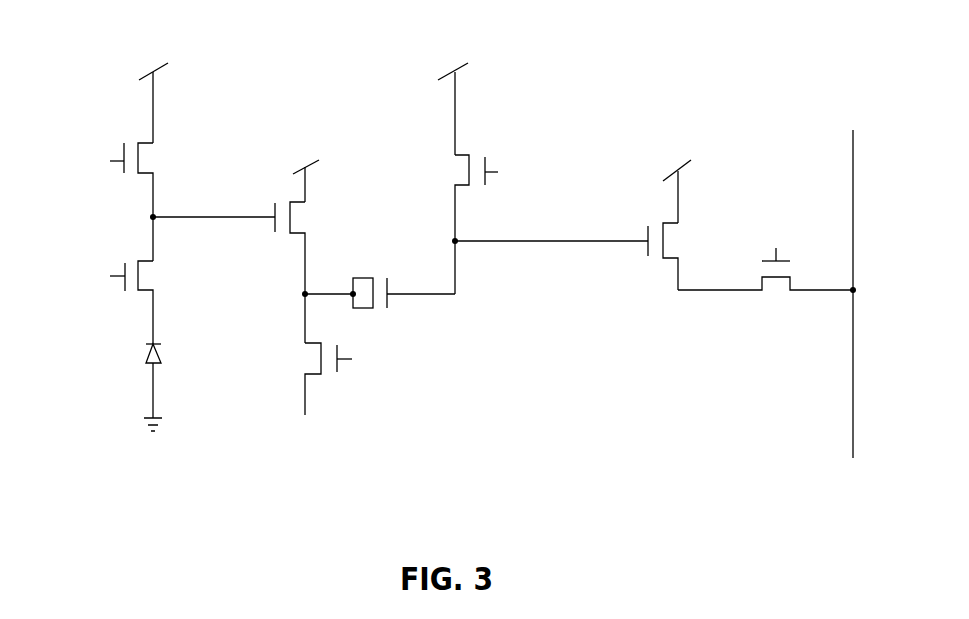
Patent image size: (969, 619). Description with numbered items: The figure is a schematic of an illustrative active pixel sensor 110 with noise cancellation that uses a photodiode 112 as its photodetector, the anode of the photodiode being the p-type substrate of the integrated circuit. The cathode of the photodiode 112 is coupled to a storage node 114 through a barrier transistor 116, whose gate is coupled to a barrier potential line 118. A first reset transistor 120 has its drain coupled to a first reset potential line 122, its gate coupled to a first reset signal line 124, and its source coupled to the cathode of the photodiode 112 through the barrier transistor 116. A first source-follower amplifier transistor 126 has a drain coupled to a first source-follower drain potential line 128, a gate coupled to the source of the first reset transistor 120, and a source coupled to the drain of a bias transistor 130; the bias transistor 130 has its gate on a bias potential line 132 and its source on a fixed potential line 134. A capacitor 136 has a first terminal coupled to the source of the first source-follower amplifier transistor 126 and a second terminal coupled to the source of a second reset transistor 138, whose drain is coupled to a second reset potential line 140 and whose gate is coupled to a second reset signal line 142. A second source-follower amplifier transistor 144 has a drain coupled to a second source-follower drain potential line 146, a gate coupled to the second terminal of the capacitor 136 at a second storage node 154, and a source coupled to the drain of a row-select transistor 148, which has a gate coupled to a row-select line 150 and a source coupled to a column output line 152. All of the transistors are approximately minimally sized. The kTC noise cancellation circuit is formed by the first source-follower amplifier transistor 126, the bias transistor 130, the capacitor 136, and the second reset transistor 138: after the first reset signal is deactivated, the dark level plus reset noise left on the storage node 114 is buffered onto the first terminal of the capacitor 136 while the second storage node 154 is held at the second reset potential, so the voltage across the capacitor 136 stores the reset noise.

The active pixel sensor 110 is at (625, 63).
The photodiode 112 is at (145, 354).
The storage node 114 is at (205, 223).
The barrier transistor 116 is at (132, 262).
The barrier potential line 118 is at (120, 282).
The first reset transistor 120 is at (158, 161).
The first reset potential line 122 is at (182, 43).
The first reset signal line 124 is at (116, 143).
The first source-follower amplifier transistor 126 is at (297, 218).
The first source-follower drain potential line 128 is at (305, 122).
The bias transistor 130 is at (309, 355).
The bias potential line 132 is at (350, 374).
The fixed potential line 134 is at (348, 448).
The capacitor 136 is at (378, 311).
The second reset transistor 138 is at (460, 164).
The second reset potential line 140 is at (476, 42).
The second reset signal line 142 is at (496, 162).
The second source-follower amplifier transistor 144 is at (657, 259).
The second source-follower drain potential line 146 is at (707, 134).
The row-select transistor 148 is at (772, 285).
The row-select line 150 is at (785, 215).
The column output line 152 is at (845, 408).
The second storage node 154 is at (565, 244).